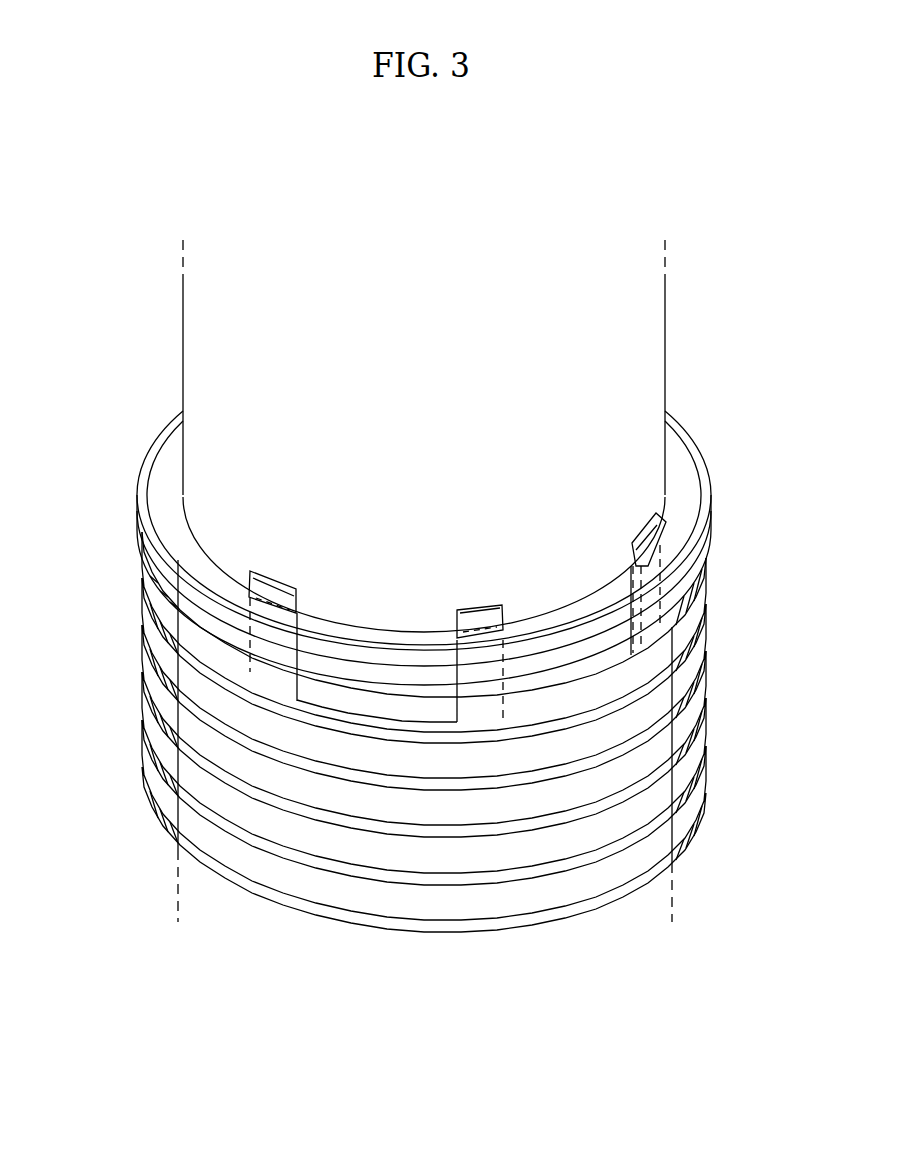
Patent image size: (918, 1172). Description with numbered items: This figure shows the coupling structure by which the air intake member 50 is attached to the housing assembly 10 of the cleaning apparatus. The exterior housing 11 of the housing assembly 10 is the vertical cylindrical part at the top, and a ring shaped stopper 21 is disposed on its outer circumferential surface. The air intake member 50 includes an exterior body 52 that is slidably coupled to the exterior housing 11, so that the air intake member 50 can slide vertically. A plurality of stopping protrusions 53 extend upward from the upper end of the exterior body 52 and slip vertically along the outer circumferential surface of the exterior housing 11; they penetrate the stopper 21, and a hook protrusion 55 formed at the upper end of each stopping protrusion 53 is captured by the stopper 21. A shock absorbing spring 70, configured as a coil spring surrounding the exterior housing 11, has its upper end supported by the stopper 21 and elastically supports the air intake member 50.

The housing assembly 10 is at (150, 366).
The exterior housing 11 is at (668, 352).
The stopper 21 is at (136, 491).
The air intake member 50 is at (176, 803).
The exterior body 52 is at (613, 727).
The stopping protrusions 53 is at (271, 682).
The hook protrusion 55 is at (662, 550).
The shock absorbing spring 70 is at (700, 688).